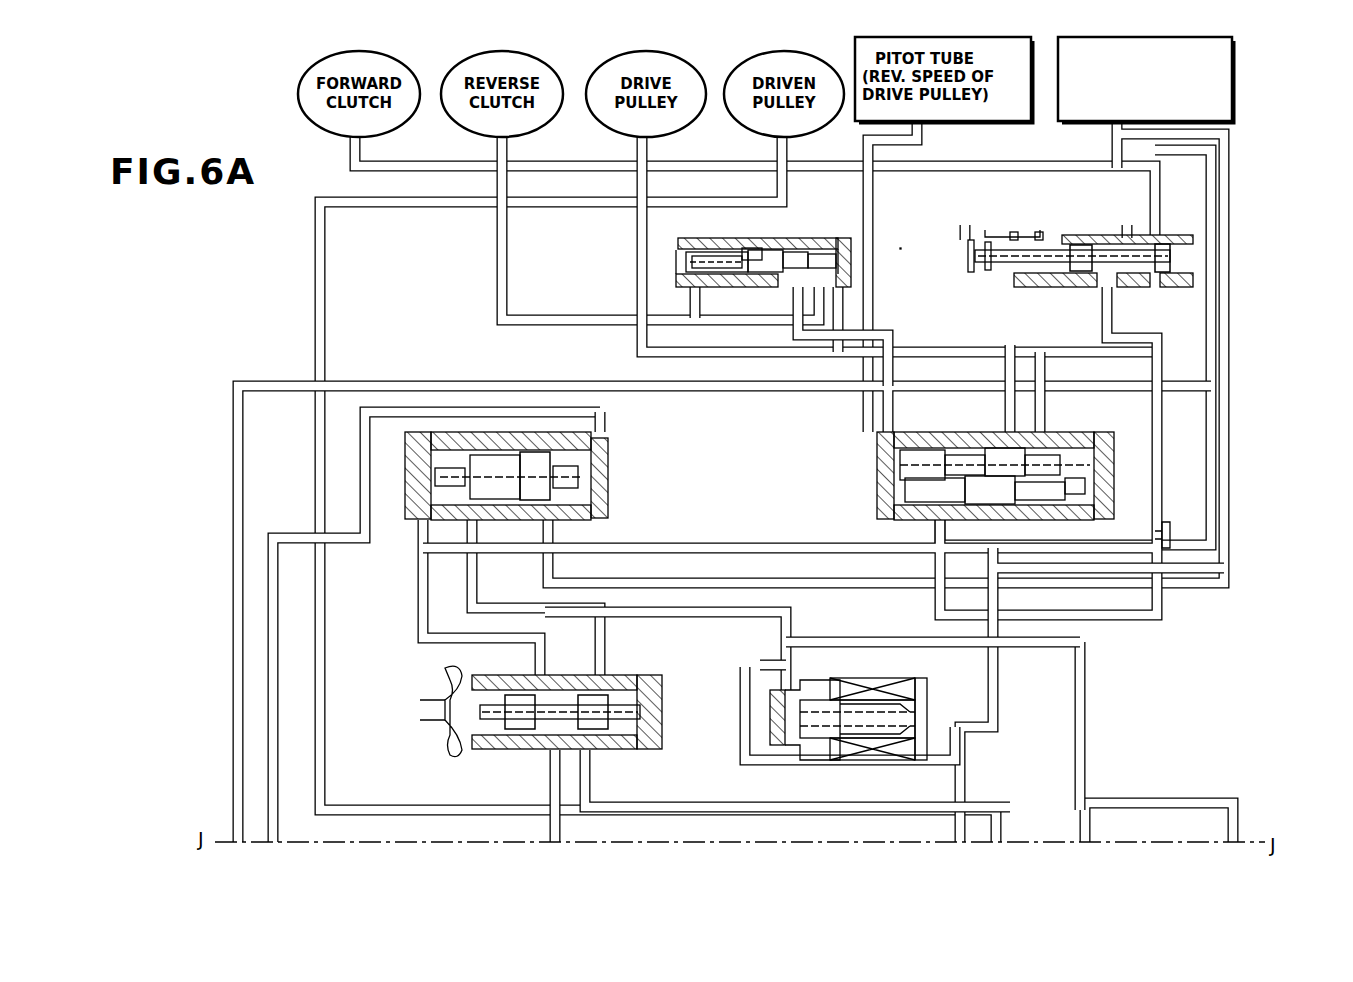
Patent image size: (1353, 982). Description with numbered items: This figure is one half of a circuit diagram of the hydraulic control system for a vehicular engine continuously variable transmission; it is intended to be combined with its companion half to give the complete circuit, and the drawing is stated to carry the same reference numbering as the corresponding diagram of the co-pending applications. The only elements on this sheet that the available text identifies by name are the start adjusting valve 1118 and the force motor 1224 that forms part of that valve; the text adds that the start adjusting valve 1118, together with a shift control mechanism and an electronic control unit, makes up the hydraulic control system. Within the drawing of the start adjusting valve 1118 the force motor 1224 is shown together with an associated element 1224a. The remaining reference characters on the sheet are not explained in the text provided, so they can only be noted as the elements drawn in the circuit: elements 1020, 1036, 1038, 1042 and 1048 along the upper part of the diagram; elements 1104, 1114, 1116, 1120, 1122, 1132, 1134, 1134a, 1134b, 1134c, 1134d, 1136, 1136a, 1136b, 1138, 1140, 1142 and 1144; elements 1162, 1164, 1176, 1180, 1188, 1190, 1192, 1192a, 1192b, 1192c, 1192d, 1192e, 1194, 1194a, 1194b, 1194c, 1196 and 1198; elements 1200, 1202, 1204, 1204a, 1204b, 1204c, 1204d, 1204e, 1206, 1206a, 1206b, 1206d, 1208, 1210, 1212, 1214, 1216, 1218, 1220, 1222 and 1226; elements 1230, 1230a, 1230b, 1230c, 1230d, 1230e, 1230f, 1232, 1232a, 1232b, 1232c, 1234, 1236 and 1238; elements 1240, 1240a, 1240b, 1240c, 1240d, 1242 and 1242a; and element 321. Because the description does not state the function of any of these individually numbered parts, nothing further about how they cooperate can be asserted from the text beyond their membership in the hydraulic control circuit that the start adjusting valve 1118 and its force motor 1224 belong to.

The pitot tube (engine speed) 1020 is at (1238, 108).
The forward clutch line 1036 is at (398, 115).
The reverse clutch line 1038 is at (540, 115).
The drive pulley line 1042 is at (683, 115).
The pitot tube (drive pulley speed) 1048 is at (984, 123).
The passage 1104 is at (1124, 222).
The spring 1114 is at (440, 660).
The valve 1116 is at (400, 530).
The start adjusting valve 1118 is at (879, 702).
The shift valve 1120 is at (870, 452).
The passage 1122 is at (838, 230).
The line pressure passage 1132 is at (408, 205).
The manual valve 1134 is at (1100, 265).
The port 1134a is at (1028, 287).
The port 1134b is at (1055, 286).
The port 1134c is at (1108, 288).
The port 1134d is at (1160, 288).
The manual valve spool 1136 is at (1094, 227).
The land 1136a is at (1080, 244).
The land 1136b is at (1165, 244).
The passage 1138 is at (968, 215).
The passage 1140 is at (1160, 476).
The passage 1142 is at (1048, 168).
The passage 1144 is at (538, 300).
The drain passage 1162 is at (1068, 765).
The drain 1164 is at (688, 775).
The passage 1176 is at (1000, 702).
The passage 1180 is at (650, 250).
The passage 1188 is at (233, 478).
The passage 1190 is at (292, 532).
The valve bore 1192 is at (542, 725).
The port 1192a is at (500, 750).
The port 1192b is at (545, 752).
The port 1192c is at (570, 750).
The port 1192d is at (618, 735).
The port 1192e is at (640, 728).
The valve spool 1194 is at (640, 705).
The land 1194a is at (518, 695).
The land 1194b is at (558, 700).
The land 1194c is at (610, 700).
The spring 1196 is at (455, 745).
The spring retainer 1198 is at (450, 730).
The passage 1200 is at (765, 497).
The passage 1202 is at (622, 625).
The valve bore 1204 is at (485, 454).
The port 1204a is at (400, 480).
The port 1204b is at (430, 520).
The port 1204c is at (552, 525).
The port 1204d is at (600, 500).
The port 1204e is at (590, 490).
The valve spool 1206 is at (590, 470).
The land 1206a is at (440, 432).
The land 1206b is at (495, 452).
The land 1206d is at (600, 418).
The spring 1208 is at (480, 452).
The passage 1210 is at (418, 612).
The passage 1212 is at (792, 636).
The passage 1214 is at (1230, 136).
The passage 1216 is at (470, 560).
The passage 1218 is at (552, 560).
The passage 1220 is at (610, 428).
The orifice 1222 is at (846, 715).
The force motor 1224 is at (868, 678).
The plunger 1224a is at (806, 698).
The passage 1226 is at (752, 662).
The valve bore 1230 is at (1030, 456).
The port 1230a is at (880, 432).
The port 1230b is at (885, 455).
The port 1230c is at (940, 448).
The port 1230d is at (975, 448).
The port 1230e is at (1030, 448).
The port 1230f is at (1095, 468).
The valve spool 1232 is at (1095, 492).
The land 1232a is at (965, 540).
The land 1232b is at (1008, 520).
The land 1232c is at (1080, 520).
The spring 1234 is at (1035, 448).
The passage 1236 is at (880, 395).
The passage 1238 is at (1035, 400).
The valve 1240 is at (775, 241).
The land 1240a is at (750, 246).
The land 1240b is at (812, 227).
The land 1240c is at (830, 245).
The land 1240d is at (870, 250).
The spool 1242 is at (690, 272).
The land 1242a is at (760, 272).
The plug 321 is at (1172, 538).